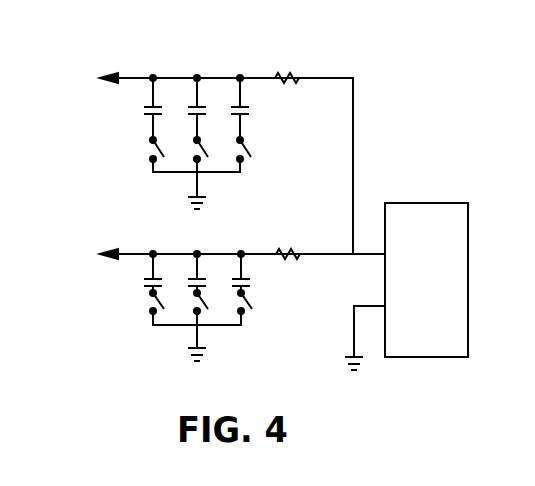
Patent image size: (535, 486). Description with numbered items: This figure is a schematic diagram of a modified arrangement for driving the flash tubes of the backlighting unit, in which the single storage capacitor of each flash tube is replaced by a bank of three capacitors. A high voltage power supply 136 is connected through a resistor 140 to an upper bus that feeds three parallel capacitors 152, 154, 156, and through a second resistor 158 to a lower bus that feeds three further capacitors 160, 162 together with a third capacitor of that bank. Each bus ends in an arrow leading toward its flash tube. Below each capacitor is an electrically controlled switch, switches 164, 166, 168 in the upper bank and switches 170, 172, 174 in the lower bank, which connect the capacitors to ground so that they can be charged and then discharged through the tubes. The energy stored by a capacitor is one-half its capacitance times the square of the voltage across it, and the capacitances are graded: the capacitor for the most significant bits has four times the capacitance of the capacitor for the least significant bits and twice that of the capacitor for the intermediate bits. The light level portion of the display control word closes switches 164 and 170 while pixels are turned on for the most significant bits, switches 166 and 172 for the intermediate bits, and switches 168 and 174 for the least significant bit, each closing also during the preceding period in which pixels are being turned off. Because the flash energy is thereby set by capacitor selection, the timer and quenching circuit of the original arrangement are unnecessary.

The high voltage power supply 136 is at (445, 203).
The resistor 140 is at (297, 73).
The capacitor 152 is at (249, 107).
The capacitor 154 is at (206, 113).
The capacitor 156 is at (146, 114).
The resistor 158 is at (252, 281).
The capacitor 160 is at (206, 279).
The capacitor 162 is at (145, 282).
The electrically controlled switch 164 is at (252, 146).
The electrically controlled switch 166 is at (212, 172).
The electrically controlled switch 168 is at (140, 152).
The electrically controlled switch 170 is at (256, 308).
The electrically controlled switch 172 is at (214, 311).
The electrically controlled switch 174 is at (141, 308).